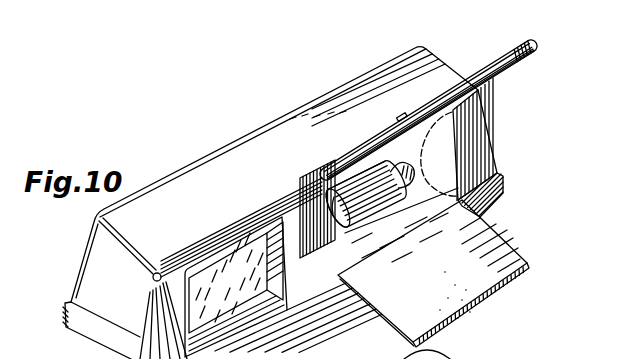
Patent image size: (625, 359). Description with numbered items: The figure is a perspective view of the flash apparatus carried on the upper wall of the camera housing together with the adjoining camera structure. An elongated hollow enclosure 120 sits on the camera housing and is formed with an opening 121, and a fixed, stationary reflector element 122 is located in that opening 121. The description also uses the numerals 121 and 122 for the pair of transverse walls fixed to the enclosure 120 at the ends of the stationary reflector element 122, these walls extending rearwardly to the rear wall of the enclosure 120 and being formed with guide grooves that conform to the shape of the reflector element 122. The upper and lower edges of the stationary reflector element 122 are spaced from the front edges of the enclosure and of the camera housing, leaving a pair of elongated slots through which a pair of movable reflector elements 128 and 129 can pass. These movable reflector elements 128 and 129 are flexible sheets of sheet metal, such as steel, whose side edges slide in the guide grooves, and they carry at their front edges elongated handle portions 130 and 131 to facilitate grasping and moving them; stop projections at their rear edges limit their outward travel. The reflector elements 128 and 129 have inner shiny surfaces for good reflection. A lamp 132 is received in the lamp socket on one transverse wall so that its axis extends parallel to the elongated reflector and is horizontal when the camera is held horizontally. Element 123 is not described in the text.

The elongated hollow enclosure 120 is at (139, 186).
The opening 121 is at (468, 153).
The fixed reflector element 122 is at (493, 192).
The curved guide 123 is at (445, 128).
The movable reflector element 128 is at (358, 150).
The movable reflector element 129 is at (500, 254).
The handle portion 130 is at (491, 66).
The handle portion 131 is at (518, 283).
The lamp 132 is at (371, 200).